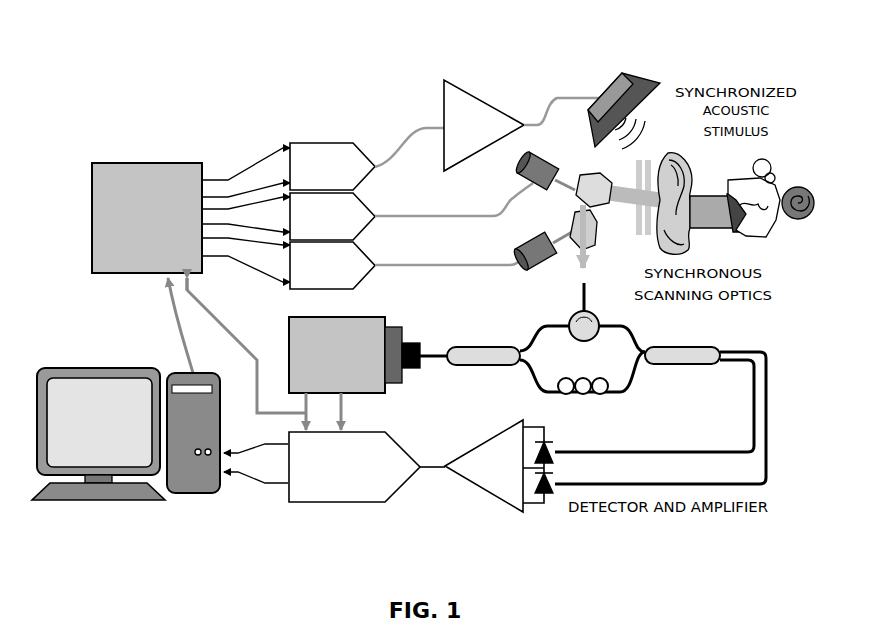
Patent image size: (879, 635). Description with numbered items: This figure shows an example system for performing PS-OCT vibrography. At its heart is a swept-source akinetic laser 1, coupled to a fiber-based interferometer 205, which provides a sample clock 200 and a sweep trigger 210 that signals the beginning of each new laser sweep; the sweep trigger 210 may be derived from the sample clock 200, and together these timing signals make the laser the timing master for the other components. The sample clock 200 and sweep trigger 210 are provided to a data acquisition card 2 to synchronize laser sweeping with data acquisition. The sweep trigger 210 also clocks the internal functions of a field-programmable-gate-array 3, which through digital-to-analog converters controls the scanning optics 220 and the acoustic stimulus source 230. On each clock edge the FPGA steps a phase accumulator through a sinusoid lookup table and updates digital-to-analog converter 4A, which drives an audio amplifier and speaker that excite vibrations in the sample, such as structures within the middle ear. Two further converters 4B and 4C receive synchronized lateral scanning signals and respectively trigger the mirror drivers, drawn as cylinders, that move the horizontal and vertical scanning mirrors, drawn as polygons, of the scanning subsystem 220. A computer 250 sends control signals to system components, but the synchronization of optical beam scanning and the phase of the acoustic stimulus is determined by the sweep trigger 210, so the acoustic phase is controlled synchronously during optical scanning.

The swept-source akinetic laser 1 is at (354, 355).
The data acquisition card 2 is at (322, 467).
The field-programmable-gate-array 3 is at (191, 215).
The digital-to-analog converter 4A is at (367, 159).
The digital-to-analog converter 4B is at (411, 211).
The digital-to-analog converter 4C is at (409, 265).
The sample clock 200 is at (343, 410).
The fiber-based interferometer 205 is at (593, 397).
The sweep trigger 210 is at (228, 333).
The scanning optics 220 is at (562, 211).
The acoustic stimulus source 230 is at (605, 85).
The computer 250 is at (78, 368).